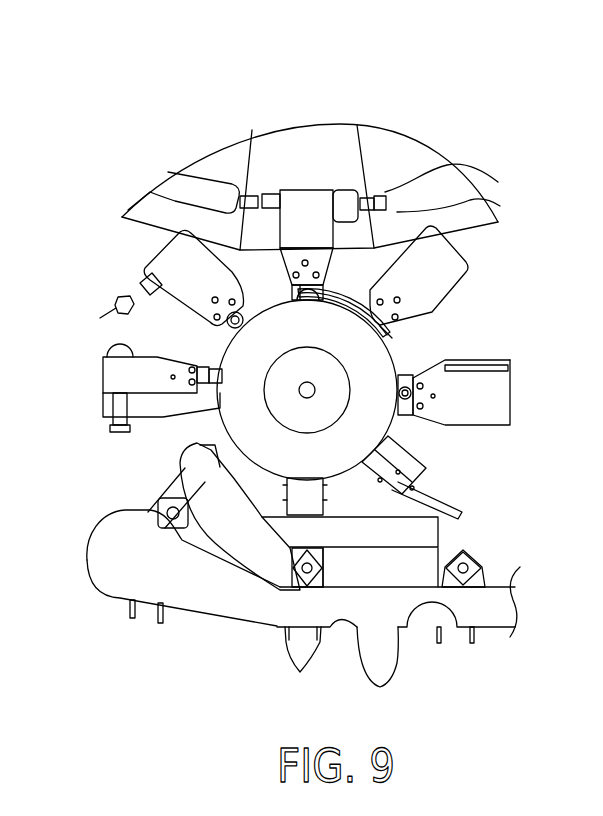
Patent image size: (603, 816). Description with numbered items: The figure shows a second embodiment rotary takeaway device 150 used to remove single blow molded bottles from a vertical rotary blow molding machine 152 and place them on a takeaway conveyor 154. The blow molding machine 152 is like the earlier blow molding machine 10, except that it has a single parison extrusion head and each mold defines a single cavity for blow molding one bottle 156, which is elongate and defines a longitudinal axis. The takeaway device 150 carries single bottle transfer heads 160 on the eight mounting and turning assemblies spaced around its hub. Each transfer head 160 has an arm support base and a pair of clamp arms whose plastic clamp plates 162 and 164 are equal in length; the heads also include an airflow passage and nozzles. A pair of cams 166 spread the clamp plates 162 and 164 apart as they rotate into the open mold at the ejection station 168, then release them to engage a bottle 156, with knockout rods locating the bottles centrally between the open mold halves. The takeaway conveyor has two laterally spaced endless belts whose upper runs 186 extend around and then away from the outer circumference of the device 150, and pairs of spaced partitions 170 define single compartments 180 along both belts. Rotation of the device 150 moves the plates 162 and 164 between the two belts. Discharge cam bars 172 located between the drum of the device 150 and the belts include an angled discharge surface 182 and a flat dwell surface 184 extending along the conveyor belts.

The blow molding machine 10 is at (505, 92).
The rotary takeaway device 150 is at (540, 287).
The vertical rotary blow molding machine 152 is at (478, 175).
The takeaway conveyor 154 is at (540, 600).
The bottle 156 is at (347, 190).
The single bottle transfer head 160 is at (437, 305).
The clamp plate 162 is at (510, 360).
The clamp plate 164 is at (510, 425).
The cam 166 is at (337, 292).
The ejection station 168 is at (305, 90).
The partition 170 is at (312, 630).
The discharge cam bar 172 is at (440, 530).
The compartment 180 is at (377, 671).
The angled discharge surface 182 is at (224, 514).
The flat dwell surface 184 is at (356, 550).
The upper run 186 is at (224, 568).